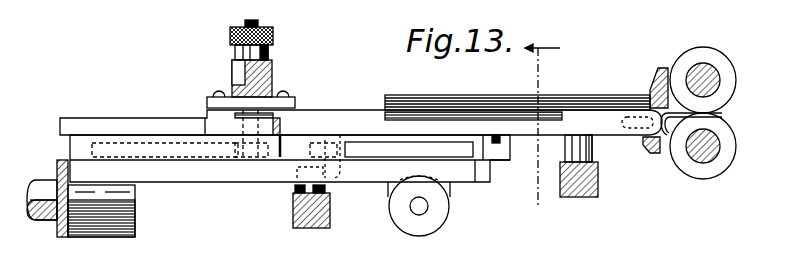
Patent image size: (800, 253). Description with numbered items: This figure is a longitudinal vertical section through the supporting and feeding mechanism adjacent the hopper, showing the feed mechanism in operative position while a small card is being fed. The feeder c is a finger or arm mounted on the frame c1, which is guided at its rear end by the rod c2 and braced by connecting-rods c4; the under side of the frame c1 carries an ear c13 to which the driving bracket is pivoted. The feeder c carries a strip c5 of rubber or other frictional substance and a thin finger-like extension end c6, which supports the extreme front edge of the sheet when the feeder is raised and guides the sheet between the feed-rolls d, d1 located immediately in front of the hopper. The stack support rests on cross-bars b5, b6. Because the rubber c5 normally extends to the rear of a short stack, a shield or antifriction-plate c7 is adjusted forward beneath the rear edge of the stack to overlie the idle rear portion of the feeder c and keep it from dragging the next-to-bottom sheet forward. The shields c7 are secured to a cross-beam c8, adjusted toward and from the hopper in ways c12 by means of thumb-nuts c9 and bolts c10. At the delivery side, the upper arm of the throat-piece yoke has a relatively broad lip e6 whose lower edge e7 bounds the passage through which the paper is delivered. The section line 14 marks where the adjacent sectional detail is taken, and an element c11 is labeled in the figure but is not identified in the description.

The feeder c is at (422, 128).
The frame c1 is at (100, 9).
The rod c2 is at (35, 178).
The connecting-rods c4 is at (243, 207).
The strip of rubber c5 is at (367, 110).
The finger-like extension end c6 is at (725, 112).
The shield c7 is at (312, 109).
The cross-beam c8 is at (275, 85).
The thumb-nut c9 is at (275, 33).
The bolt c10 is at (262, 22).
The clamp screw c11 is at (269, 7).
The way c12 is at (190, 0).
The ear c13 is at (448, 215).
The cross-bar b5 is at (293, 225).
The cross-bar b6 is at (598, 195).
The feed-roll d is at (720, 78).
The feed-roll d1 is at (720, 150).
The broad lip e6 is at (658, 68).
The lower edge of lip e7 is at (650, 107).
The section line 14 is at (558, 38).